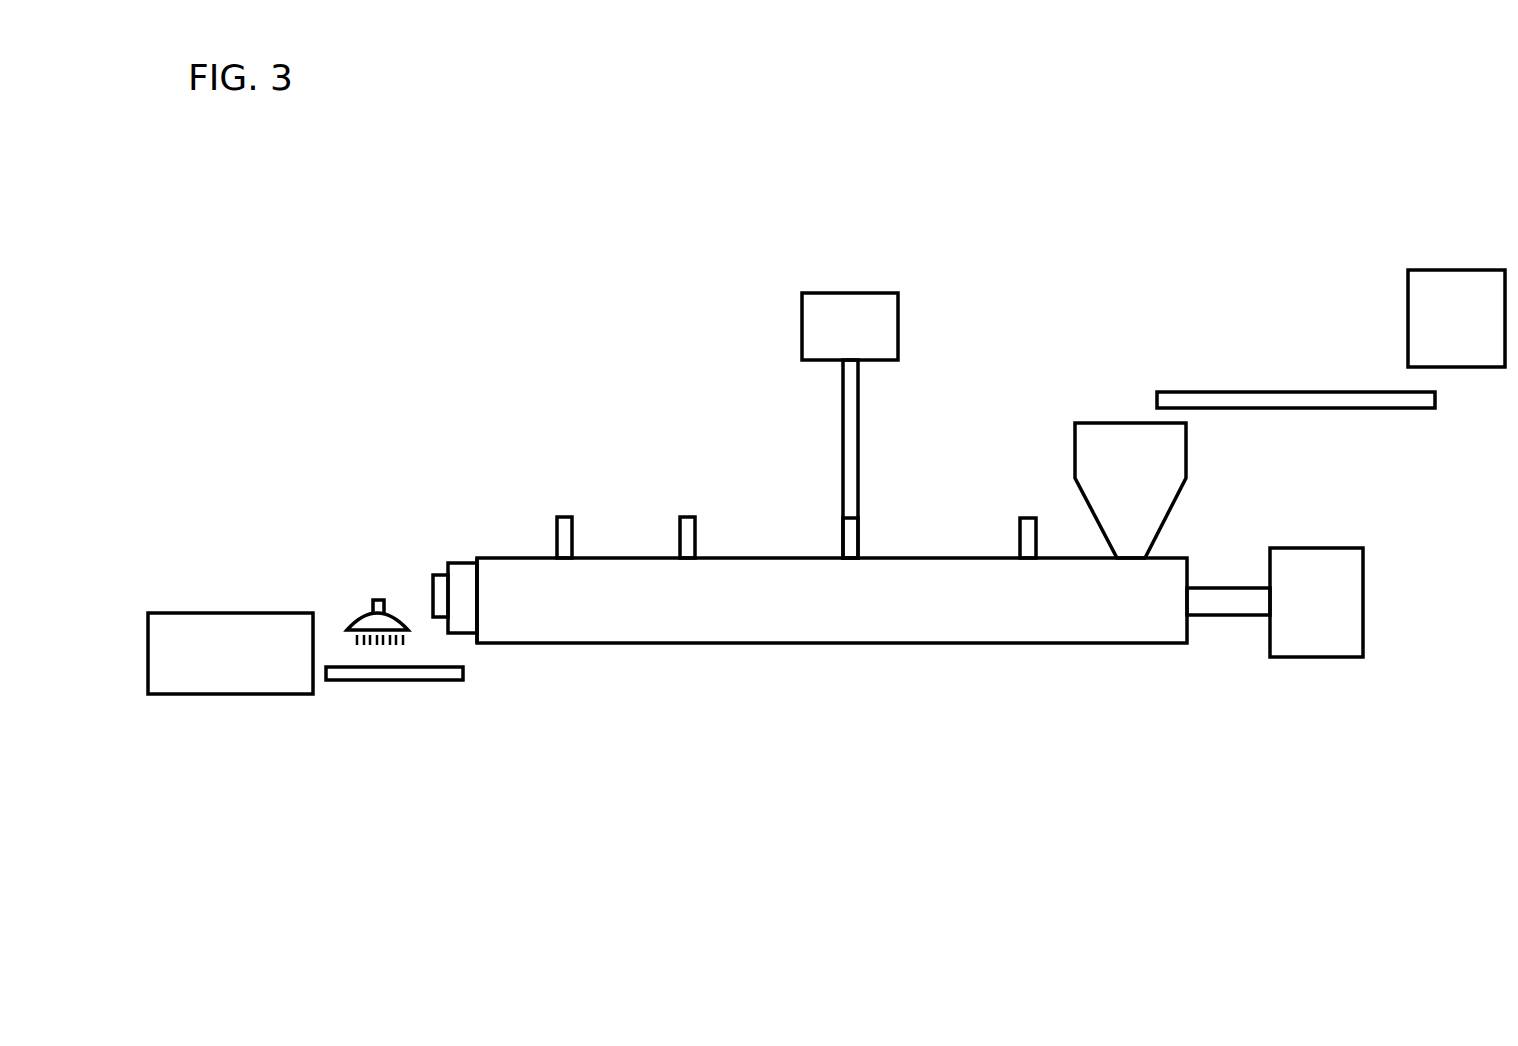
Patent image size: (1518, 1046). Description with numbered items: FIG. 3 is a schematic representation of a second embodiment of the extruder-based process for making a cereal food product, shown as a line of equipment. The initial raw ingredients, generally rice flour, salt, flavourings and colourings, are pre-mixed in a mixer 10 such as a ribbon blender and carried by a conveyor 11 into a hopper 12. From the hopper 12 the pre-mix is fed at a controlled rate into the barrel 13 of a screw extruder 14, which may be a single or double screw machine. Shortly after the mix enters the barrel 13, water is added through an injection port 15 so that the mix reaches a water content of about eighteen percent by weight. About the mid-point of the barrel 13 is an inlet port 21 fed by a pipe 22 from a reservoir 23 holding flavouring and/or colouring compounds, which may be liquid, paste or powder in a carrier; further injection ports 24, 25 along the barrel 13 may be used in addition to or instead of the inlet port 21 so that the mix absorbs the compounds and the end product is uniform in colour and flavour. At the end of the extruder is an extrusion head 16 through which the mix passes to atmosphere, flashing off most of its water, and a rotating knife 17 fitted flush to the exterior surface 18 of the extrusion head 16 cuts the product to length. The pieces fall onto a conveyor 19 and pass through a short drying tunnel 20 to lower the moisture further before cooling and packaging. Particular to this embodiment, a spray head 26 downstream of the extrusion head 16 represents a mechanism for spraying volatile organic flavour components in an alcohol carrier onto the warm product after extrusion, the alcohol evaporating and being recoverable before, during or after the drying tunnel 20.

The mixer 10 is at (1455, 270).
The conveyor 11 is at (1303, 392).
The hopper 12 is at (1188, 455).
The barrel 13 is at (920, 643).
The screw extruder 14 is at (1318, 658).
The injection port 15 is at (1020, 520).
The extrusion head 16 is at (462, 558).
The rotating knife 17 is at (432, 592).
The exterior surface 18 is at (448, 563).
The conveyor 19 is at (420, 683).
The drying tunnel 20 is at (245, 697).
The inlet port 21 is at (842, 531).
The pipe 22 is at (860, 434).
The reservoir 23 is at (900, 319).
The injection port 24 is at (678, 515).
The injection port 25 is at (557, 515).
The spray head 26 is at (354, 598).